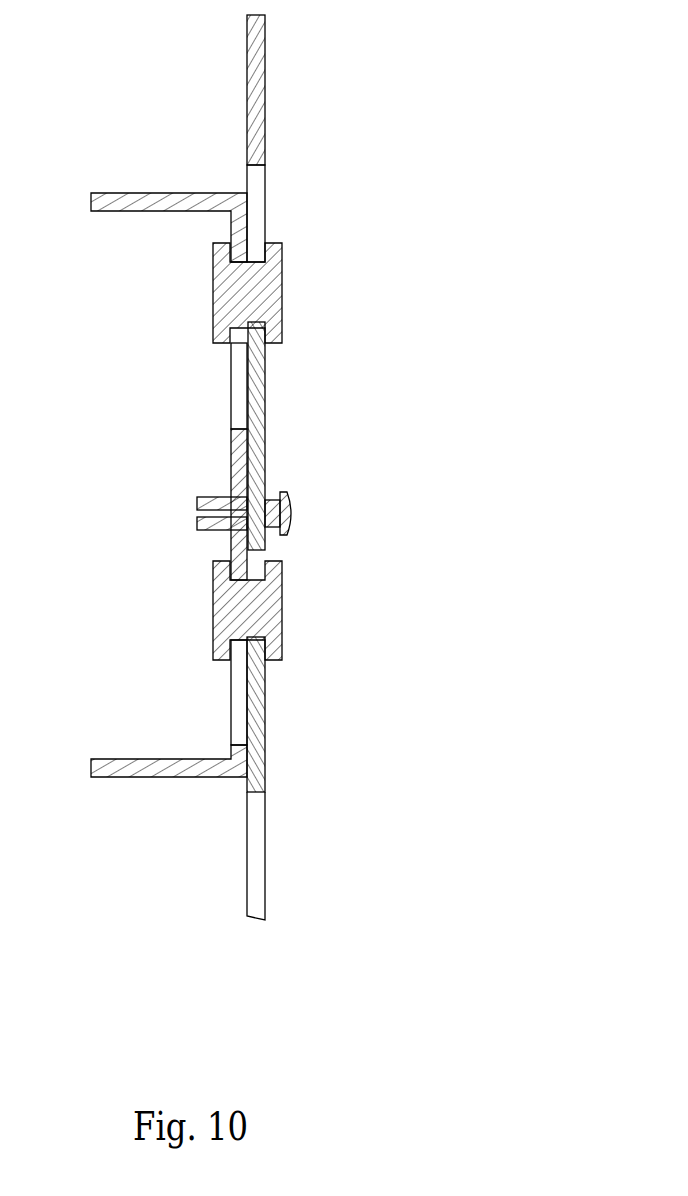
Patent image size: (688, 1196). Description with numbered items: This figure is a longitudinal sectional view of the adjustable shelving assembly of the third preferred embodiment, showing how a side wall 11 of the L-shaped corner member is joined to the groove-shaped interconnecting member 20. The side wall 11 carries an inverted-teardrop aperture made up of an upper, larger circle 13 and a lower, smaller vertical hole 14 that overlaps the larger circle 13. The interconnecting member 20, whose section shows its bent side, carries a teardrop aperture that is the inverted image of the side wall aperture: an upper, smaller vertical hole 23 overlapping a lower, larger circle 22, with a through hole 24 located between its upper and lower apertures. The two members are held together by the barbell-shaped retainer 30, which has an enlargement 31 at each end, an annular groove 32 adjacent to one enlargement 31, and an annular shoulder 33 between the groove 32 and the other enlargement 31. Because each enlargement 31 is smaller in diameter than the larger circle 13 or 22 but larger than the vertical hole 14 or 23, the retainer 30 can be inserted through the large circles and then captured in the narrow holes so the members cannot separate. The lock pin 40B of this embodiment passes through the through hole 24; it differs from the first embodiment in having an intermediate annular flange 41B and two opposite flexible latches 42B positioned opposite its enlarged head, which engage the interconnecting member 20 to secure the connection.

The side wall 11 is at (265, 40).
The larger circle 13 is at (258, 200).
The interconnecting member 20 is at (150, 782).
The larger circle 22 is at (235, 382).
The through hole 24 is at (233, 487).
The vertical hole 23 is at (240, 565).
The retainer 30 is at (299, 283).
The enlargement 31 is at (216, 583).
The annular shoulder 33 is at (232, 678).
The annular groove 32 is at (262, 675).
The vertical hole 14 is at (308, 778).
The lock pin 40B is at (313, 502).
The annular flange 41B is at (283, 543).
The flexible latch 42B is at (197, 498).